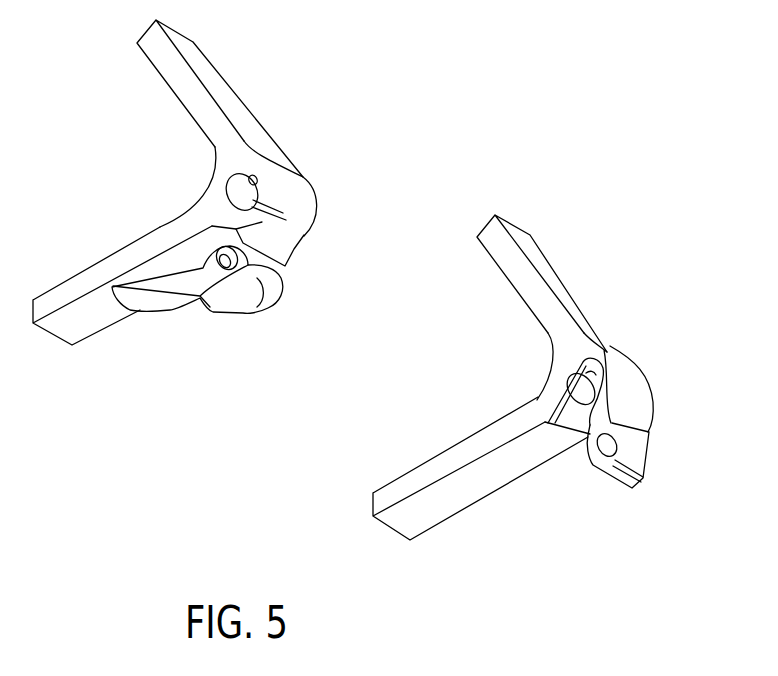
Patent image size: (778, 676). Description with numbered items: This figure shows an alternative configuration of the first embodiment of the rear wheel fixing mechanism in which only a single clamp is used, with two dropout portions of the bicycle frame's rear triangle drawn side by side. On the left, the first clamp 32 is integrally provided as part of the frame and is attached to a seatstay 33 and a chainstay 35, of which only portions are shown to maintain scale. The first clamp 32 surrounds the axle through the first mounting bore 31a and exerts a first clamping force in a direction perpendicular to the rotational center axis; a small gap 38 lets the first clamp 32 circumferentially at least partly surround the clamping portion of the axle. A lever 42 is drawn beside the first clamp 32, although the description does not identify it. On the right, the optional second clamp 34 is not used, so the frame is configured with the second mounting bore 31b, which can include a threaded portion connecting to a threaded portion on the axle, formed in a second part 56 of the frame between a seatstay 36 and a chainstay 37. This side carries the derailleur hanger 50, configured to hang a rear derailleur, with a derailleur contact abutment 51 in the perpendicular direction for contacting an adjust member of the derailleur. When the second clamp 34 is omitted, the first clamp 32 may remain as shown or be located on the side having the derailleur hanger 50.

The seatstay 33 is at (205, 75).
The first mounting bore 31a is at (252, 183).
The first clamp 32 is at (302, 193).
The small gap 38 is at (288, 221).
The chainstay 35 is at (83, 328).
The lever 42 is at (170, 298).
The seatstay 36 is at (543, 272).
The second mounting bore 31b is at (594, 376).
The second clamp 34 is at (637, 389).
The derailleur hanger 50 is at (640, 448).
The derailleur contact abutment 51 is at (640, 477).
The second part of the bicycle frame 56 is at (563, 413).
The chainstay 37 is at (423, 525).